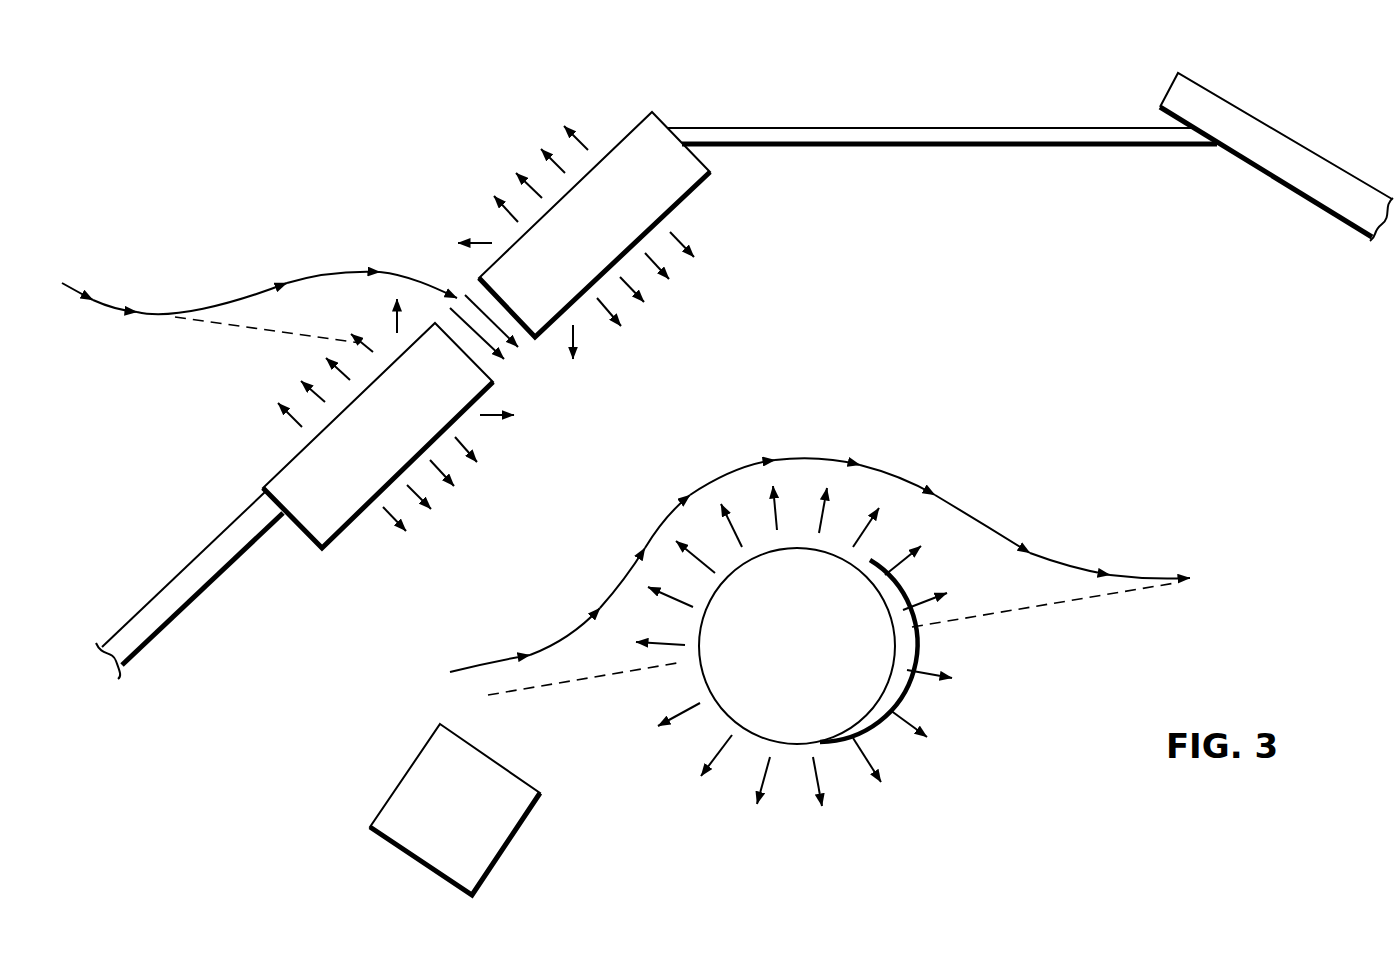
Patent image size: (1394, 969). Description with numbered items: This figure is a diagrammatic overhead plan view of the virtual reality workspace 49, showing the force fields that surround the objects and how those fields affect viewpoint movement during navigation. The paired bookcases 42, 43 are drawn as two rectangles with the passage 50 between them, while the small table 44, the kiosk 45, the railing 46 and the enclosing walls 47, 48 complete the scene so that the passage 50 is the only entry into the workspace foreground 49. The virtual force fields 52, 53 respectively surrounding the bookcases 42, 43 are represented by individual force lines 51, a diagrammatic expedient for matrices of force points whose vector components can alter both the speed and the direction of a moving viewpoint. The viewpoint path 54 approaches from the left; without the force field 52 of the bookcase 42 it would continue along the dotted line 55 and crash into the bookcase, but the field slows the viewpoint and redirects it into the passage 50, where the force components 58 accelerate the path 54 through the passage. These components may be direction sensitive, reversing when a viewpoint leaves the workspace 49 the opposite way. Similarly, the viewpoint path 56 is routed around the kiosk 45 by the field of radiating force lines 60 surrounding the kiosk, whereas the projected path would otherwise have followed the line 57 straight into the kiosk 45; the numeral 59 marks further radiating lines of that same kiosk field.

The bookcase 42 is at (280, 484).
The bookcase 43 is at (633, 137).
The small table 44 is at (503, 794).
The kiosk 45 is at (827, 702).
The railing 46 is at (803, 126).
The enclosing wall 47 is at (1227, 121).
The enclosing wall 48 is at (178, 582).
The workspace 49 is at (690, 378).
The passage 50 is at (513, 355).
The force line 51 is at (563, 172).
The virtual force field 52 is at (300, 400).
The virtual force field 53 is at (535, 168).
The viewpoint path 54 is at (110, 302).
The dotted line 55 is at (283, 332).
The viewpoint path 56 is at (736, 465).
The line 57 is at (1012, 617).
The force component 58 is at (477, 300).
The radial arrows 59 is at (893, 540).
The radiating force line 60 is at (780, 510).